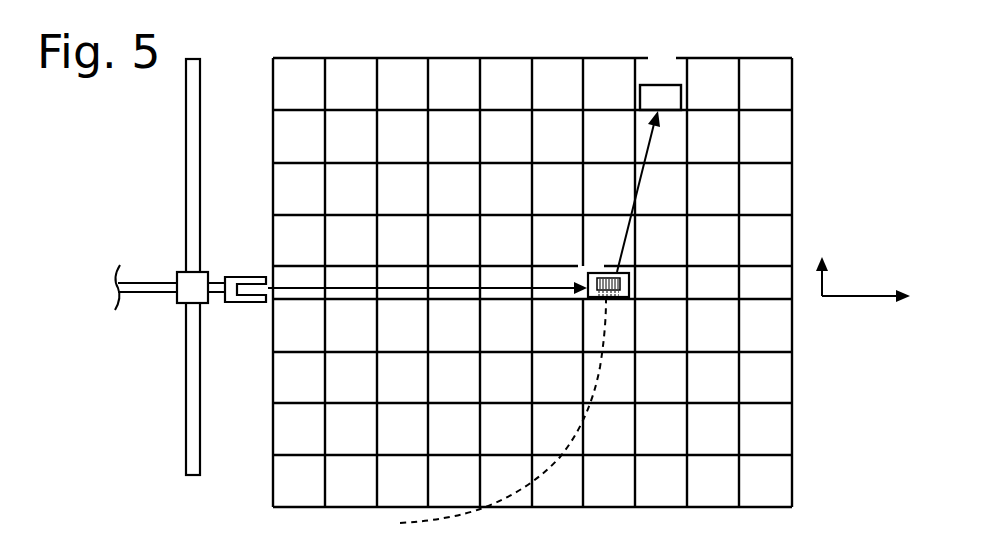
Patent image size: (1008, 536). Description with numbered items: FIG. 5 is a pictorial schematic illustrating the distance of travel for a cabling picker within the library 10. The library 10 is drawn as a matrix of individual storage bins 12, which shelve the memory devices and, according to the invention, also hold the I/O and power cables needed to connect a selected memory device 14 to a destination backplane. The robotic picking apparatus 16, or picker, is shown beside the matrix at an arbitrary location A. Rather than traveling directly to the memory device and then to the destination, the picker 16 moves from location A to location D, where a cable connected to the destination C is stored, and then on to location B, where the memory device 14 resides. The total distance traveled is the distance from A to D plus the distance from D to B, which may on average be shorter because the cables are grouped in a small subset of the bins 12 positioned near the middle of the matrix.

The library 10 is at (847, 75).
The storage bins 12 is at (778, 142).
The memory device 14 is at (683, 95).
The robotic picking apparatus 16 is at (185, 360).